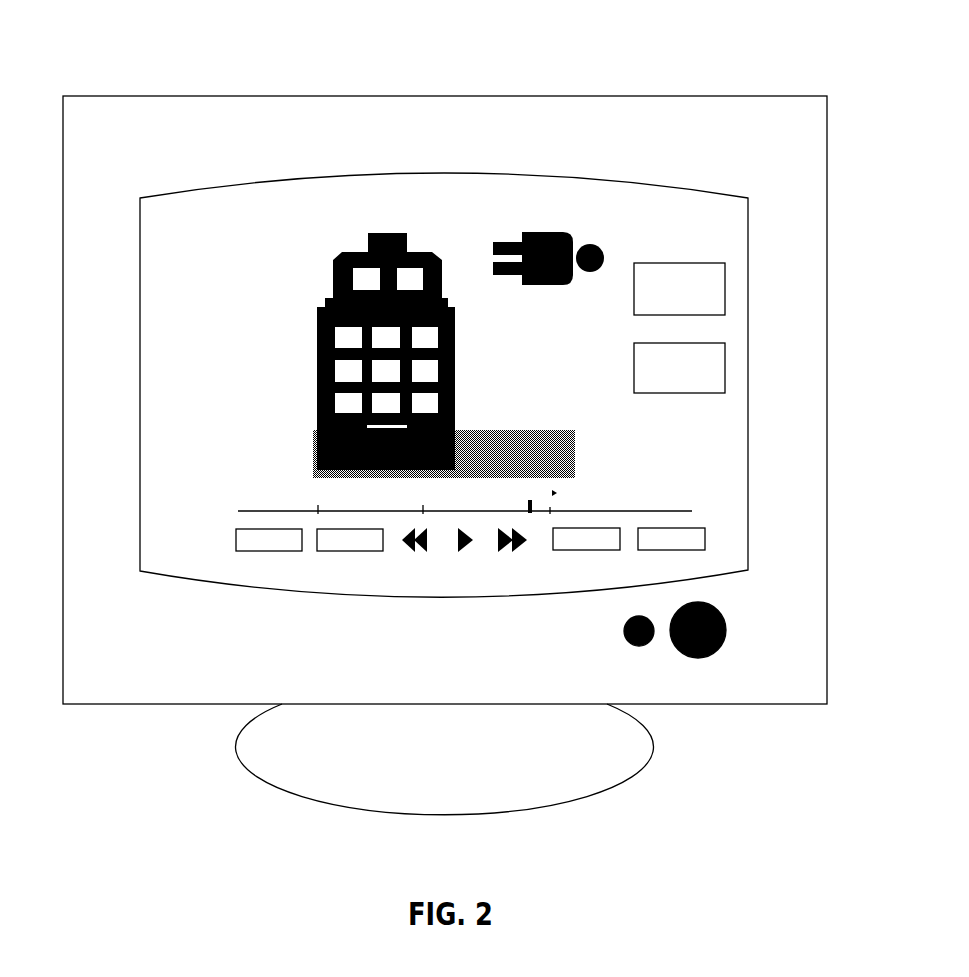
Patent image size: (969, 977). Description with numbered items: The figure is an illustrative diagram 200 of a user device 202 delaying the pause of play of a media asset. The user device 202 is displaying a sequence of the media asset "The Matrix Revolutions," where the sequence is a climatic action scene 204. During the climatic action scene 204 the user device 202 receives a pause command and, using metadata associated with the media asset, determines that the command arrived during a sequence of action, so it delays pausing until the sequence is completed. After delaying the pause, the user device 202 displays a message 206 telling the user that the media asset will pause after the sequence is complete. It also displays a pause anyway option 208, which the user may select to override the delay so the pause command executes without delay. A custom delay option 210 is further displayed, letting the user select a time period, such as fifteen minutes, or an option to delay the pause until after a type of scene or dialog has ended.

The illustrative diagram 200 is at (203, 41).
The user device 202 is at (67, 495).
The climatic action scene 204 is at (190, 328).
The message 206 is at (575, 450).
The pause anyway option 208 is at (733, 282).
The custom delay option 210 is at (725, 362).